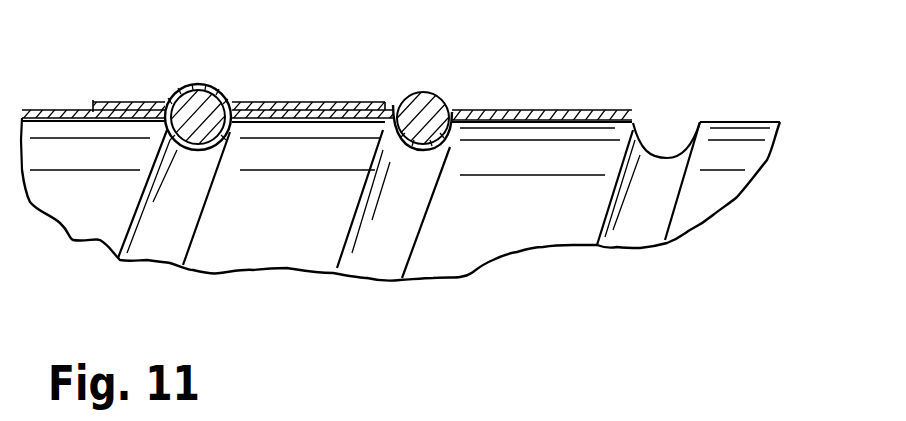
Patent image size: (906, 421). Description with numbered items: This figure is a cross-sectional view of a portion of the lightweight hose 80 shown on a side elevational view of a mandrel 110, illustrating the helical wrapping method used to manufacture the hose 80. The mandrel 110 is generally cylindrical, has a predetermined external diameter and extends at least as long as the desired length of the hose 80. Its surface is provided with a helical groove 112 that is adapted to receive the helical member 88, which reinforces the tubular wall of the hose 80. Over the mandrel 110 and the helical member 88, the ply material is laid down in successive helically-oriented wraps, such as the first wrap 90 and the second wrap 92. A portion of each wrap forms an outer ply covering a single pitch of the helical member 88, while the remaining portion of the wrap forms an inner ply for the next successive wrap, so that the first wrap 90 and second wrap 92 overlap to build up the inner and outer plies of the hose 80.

The lightweight hose 80 is at (549, 40).
The helical member 88 is at (196, 86).
The first wrap 90 is at (55, 108).
The second wrap 92 is at (290, 102).
The mandrel 110 is at (516, 230).
The helical groove 112 is at (177, 225).